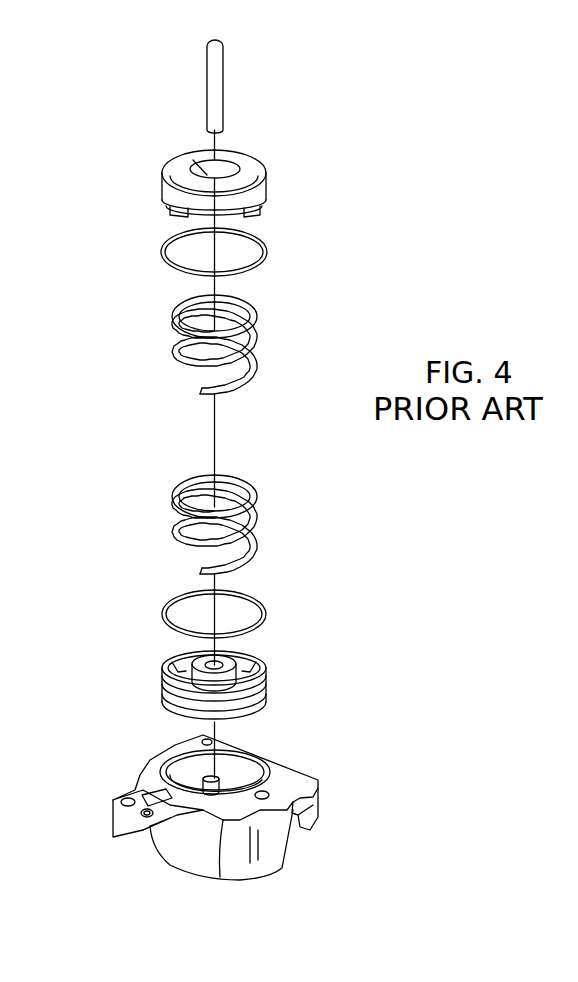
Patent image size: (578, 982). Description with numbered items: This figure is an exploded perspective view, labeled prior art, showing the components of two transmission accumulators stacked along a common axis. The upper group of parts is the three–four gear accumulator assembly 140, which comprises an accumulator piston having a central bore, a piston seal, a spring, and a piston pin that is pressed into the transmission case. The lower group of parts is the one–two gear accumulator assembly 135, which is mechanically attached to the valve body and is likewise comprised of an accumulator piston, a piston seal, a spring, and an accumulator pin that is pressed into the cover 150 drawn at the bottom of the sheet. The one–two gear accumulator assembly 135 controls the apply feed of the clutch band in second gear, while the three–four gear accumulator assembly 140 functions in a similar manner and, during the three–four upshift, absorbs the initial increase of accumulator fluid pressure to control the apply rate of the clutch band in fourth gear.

The 3–4 gear accumulator assembly 140 is at (387, 200).
The 1–2 gear accumulator assembly 135 is at (430, 612).
The cover 150 is at (318, 787).